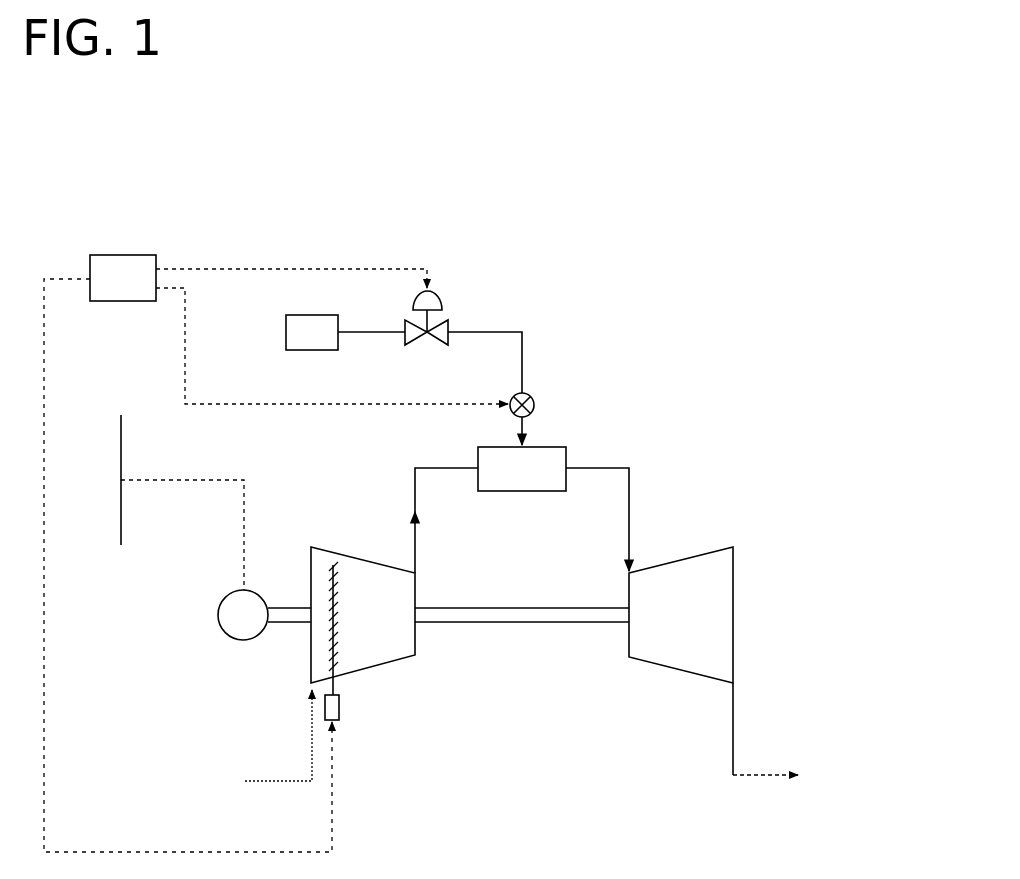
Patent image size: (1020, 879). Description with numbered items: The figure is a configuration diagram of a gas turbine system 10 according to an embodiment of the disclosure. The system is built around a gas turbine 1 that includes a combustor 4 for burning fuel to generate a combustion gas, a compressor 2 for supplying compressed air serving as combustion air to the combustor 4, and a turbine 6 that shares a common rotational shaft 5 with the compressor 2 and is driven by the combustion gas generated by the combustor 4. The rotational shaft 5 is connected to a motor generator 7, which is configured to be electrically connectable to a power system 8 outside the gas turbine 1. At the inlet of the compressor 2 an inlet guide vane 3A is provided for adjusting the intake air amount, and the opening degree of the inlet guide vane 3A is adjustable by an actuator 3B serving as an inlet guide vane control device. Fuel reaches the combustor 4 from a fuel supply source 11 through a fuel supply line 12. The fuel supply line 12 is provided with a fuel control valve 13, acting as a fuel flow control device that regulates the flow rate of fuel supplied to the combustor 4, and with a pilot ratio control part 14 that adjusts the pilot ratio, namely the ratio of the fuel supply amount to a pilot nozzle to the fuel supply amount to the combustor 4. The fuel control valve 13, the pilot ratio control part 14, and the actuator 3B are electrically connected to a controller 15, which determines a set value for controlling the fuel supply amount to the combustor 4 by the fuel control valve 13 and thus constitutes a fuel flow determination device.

The gas turbine 1 is at (632, 412).
The compressor 2 is at (376, 560).
The inlet guide vane 3A is at (333, 565).
The actuator 3B is at (339, 706).
The combustor 4 is at (548, 446).
The rotational shaft 5 is at (527, 624).
The turbine 6 is at (678, 557).
The motor generator 7 is at (243, 641).
The power system 8 is at (121, 432).
The gas turbine system 10 is at (228, 212).
The fuel supply source 11 is at (286, 332).
The fuel supply line 12 is at (380, 340).
The fuel control valve 13 is at (442, 300).
The pilot ratio control part 14 is at (528, 392).
The controller 15 is at (120, 302).